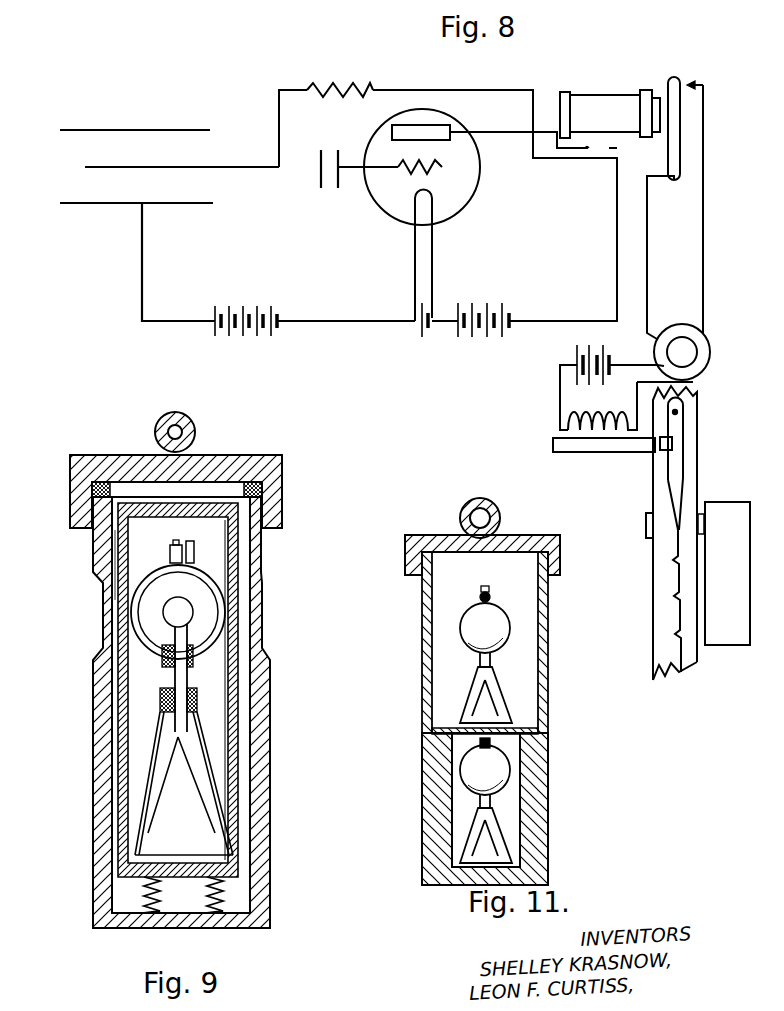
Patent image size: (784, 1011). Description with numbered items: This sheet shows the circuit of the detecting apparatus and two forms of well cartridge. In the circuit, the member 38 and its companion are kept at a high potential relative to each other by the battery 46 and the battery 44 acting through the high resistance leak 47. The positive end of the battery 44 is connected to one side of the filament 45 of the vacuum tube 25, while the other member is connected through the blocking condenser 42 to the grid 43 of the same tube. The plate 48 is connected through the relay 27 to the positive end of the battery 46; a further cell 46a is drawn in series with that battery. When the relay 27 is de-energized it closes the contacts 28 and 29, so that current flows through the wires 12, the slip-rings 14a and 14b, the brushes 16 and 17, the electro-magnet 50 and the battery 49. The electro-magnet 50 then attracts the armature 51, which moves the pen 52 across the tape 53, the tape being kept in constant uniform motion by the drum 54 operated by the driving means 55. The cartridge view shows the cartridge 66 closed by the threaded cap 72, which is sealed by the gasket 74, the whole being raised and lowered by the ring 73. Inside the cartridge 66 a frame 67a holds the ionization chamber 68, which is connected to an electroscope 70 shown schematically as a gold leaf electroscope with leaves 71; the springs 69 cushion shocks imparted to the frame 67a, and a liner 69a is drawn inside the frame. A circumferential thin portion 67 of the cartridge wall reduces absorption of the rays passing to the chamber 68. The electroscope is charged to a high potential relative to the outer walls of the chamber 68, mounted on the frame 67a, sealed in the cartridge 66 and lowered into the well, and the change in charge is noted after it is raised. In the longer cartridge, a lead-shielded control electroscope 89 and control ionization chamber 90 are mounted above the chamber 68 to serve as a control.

In FIG. 8, the member 38 is at (122, 129).
In FIG. 8, the battery 44 is at (246, 310).
In FIG. 8, the high resistance leak 47 is at (350, 84).
In FIG. 8, the blocking condenser 42 is at (341, 195).
In FIG. 8, the vacuum tube 25 is at (430, 167).
In FIG. 8, the plate 48 is at (433, 122).
In FIG. 8, the wires 12 is at (597, 148).
In FIG. 8, the grid 43 is at (442, 167).
In FIG. 8, the filament 45 is at (433, 212).
In FIG. 8, the battery cell 46a is at (417, 331).
In FIG. 8, the battery 46 is at (483, 332).
In FIG. 8, the relay 27 is at (610, 105).
In FIG. 8, the contact 28 is at (674, 208).
In FIG. 8, the contact 29 is at (697, 199).
In FIG. 8, the slip-ring 14a is at (682, 344).
In FIG. 8, the slip-ring 14b is at (711, 352).
In FIG. 8, the brush 17 is at (656, 364).
In FIG. 8, the brush 16 is at (693, 382).
In FIG. 8, the battery 49 is at (608, 379).
In FIG. 8, the electro-magnet 50 is at (602, 406).
In FIG. 8, the armature 51 is at (672, 444).
In FIG. 8, the pen 52 is at (684, 472).
In FIG. 8, the tape 53 is at (653, 620).
In FIG. 8, the drum 54 is at (646, 528).
In FIG. 8, the driving means 55 is at (724, 573).
In FIG. 9, the ring 73 is at (196, 424).
In FIG. 9, the gasket 74 is at (264, 491).
In FIG. 9, the threaded cap 72 is at (282, 510).
In FIG. 9, the circumferential thin portion 67 is at (258, 612).
In FIG. 9, the frame 67a is at (240, 572).
In FIG. 9, the cartridge 66 is at (262, 676).
In FIG. 9, the ionization chamber 68 is at (200, 573).
In FIG. 11, the ionization chamber 68 is at (492, 607).
In FIG. 9, the electroscope 70 is at (214, 729).
In FIG. 11, the electroscope 70 is at (500, 698).
In FIG. 9, the leaves 71 is at (181, 785).
In FIG. 9, the liner 69a is at (245, 743).
In FIG. 9, the springs 69 is at (183, 895).
In FIG. 11, the control ionization chamber 90 is at (511, 769).
In FIG. 11, the control electroscope 89 is at (503, 833).